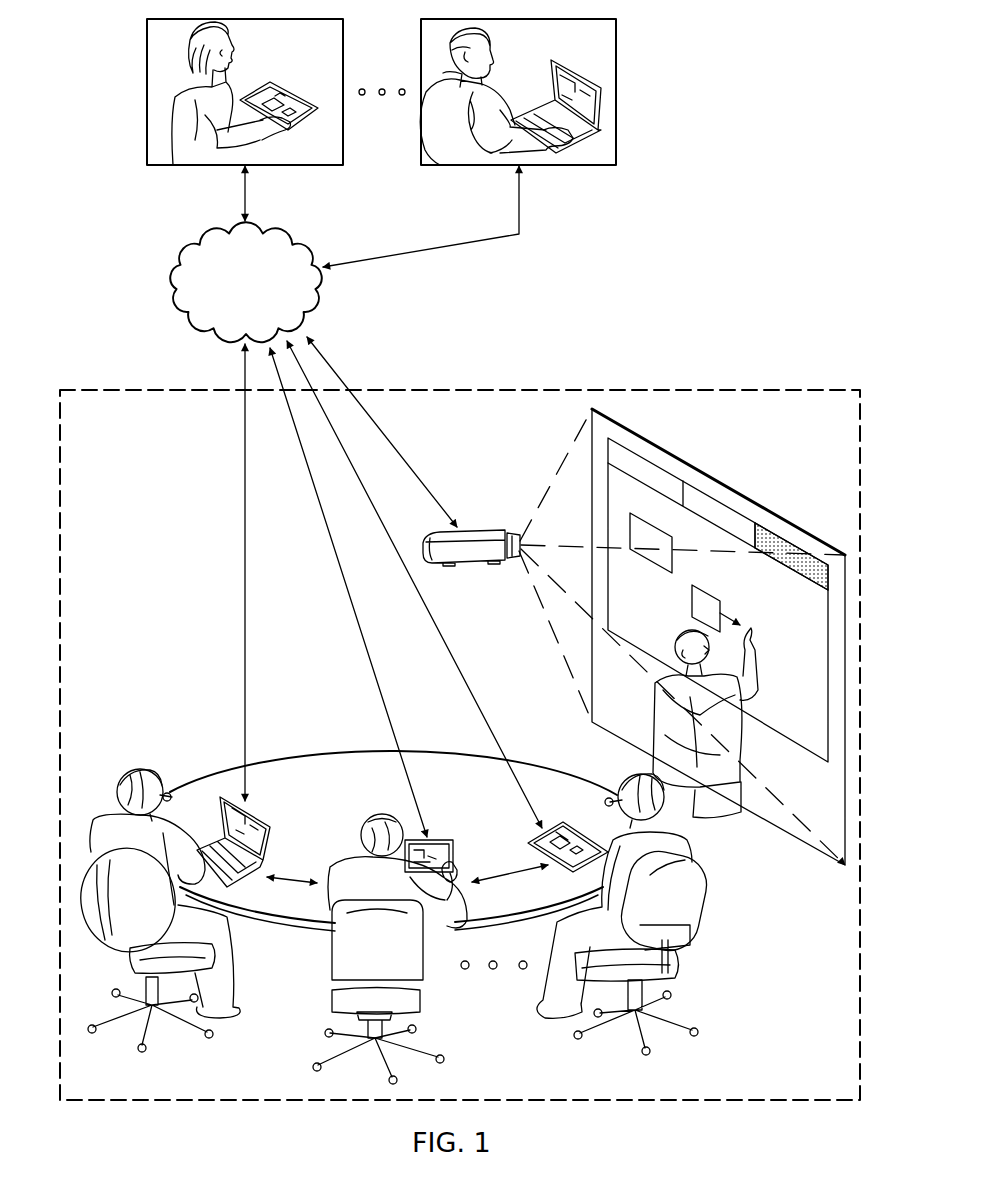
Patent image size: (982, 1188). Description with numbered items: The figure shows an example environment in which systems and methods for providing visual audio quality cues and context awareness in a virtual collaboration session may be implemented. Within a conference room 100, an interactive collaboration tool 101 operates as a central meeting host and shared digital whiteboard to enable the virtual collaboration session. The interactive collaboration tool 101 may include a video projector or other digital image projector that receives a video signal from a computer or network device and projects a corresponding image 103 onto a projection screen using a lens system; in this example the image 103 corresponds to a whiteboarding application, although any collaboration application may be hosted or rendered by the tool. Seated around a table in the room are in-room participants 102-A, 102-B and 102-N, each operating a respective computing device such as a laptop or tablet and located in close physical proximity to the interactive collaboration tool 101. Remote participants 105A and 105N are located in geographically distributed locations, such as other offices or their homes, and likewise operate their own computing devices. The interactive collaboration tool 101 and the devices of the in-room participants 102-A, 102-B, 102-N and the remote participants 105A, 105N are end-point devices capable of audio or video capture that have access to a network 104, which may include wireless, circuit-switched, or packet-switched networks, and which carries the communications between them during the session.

The conference room 100 is at (648, 388).
The interactive collaboration tool 101 is at (473, 565).
The image 103 is at (717, 497).
The network 104 is at (263, 297).
The remote participant 105A is at (147, 92).
The remote participant 105N is at (617, 91).
The in-room participant 102-A is at (137, 770).
The in-room participant 102-B is at (318, 946).
The in-room participant 102-N is at (688, 843).